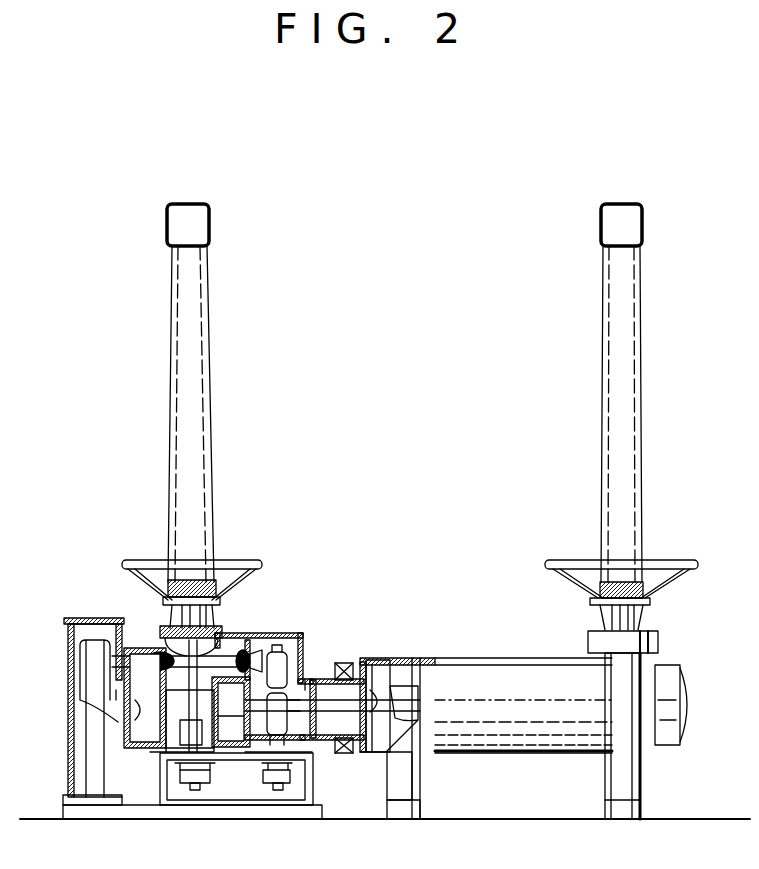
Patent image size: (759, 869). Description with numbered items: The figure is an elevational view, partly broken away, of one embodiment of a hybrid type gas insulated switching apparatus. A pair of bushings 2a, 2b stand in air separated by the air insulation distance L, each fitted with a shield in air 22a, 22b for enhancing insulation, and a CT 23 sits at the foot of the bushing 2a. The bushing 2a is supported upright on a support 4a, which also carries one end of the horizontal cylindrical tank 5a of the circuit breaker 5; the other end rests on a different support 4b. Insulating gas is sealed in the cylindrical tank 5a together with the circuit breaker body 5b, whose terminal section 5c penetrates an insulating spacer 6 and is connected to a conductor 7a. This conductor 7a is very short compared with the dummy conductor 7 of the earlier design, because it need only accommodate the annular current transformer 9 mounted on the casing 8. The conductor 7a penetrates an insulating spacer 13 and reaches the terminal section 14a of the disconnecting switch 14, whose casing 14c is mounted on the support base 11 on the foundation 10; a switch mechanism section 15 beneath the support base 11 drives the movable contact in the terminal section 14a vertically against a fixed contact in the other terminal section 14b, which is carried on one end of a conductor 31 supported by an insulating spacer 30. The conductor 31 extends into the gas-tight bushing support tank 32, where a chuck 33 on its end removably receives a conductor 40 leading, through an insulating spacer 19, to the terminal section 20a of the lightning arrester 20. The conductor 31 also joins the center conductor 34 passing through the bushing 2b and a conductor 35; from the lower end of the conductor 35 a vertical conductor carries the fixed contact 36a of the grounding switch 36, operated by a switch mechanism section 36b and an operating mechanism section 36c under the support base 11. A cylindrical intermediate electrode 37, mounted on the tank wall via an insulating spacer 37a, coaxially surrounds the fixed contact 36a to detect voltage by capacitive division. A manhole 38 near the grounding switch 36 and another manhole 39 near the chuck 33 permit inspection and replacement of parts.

The air insulation distance L is at (601, 225).
The bushing 2a is at (641, 398).
The bushing 2b is at (207, 398).
The shield in air 22a is at (693, 560).
The shield in air 22b is at (258, 560).
The CT 23 is at (658, 642).
The support 4a is at (640, 781).
The support 4b is at (420, 781).
The circuit breaker 5 is at (561, 705).
The cylindrical tank 5a is at (496, 660).
The circuit breaker body 5b is at (418, 688).
The terminal section 5c is at (382, 708).
The insulating spacer 6 is at (364, 754).
The dummy conductor 7 is at (332, 709).
The conductor 7a is at (330, 708).
The casing 8 is at (338, 663).
The annular current transformer 9 is at (345, 663).
The foundation 10 is at (312, 808).
The support base 11 is at (327, 788).
The insulating spacer 13 is at (313, 679).
The disconnecting switch 14 is at (283, 633).
The terminal section 14a is at (287, 722).
The terminal section 14b is at (270, 645).
The casing 14c is at (303, 633).
The switch mechanism section 15 is at (280, 790).
The insulating spacer 19 is at (131, 704).
The lightning arrester 20 is at (76, 724).
The terminal section 20a is at (70, 628).
The insulating spacer 30 is at (244, 650).
The conductor 31 is at (231, 693).
The bushing support tank 32 is at (150, 648).
The chuck 33 is at (165, 690).
The center conductor 34 is at (226, 632).
The conductor 35 is at (150, 722).
The grounding switch 36 is at (222, 775).
The fixed contact 36a is at (139, 779).
The switch mechanism section 36b is at (190, 790).
The operating mechanism section 36c is at (200, 790).
The cylindrical intermediate electrode 37 is at (200, 740).
The insulating spacer 37a is at (172, 742).
The manhole 38 is at (233, 721).
The manhole 39 is at (126, 648).
The conductor 40 is at (140, 648).